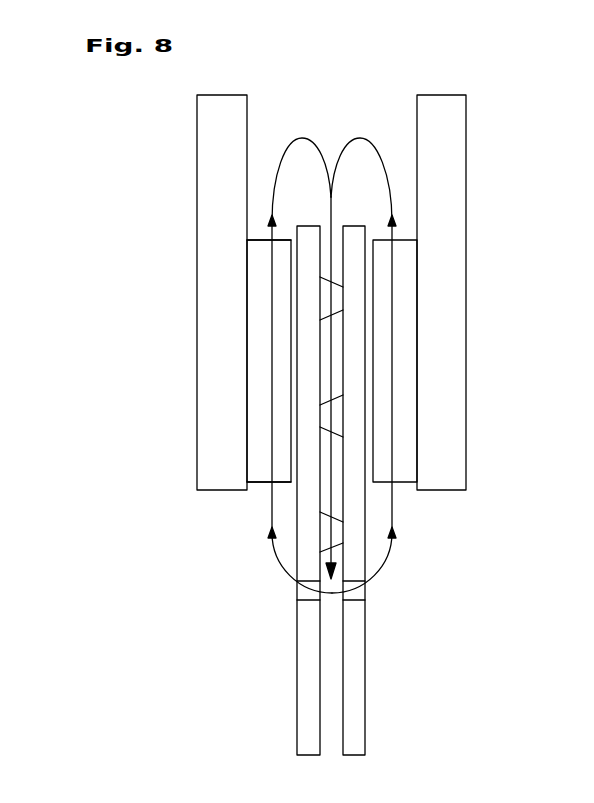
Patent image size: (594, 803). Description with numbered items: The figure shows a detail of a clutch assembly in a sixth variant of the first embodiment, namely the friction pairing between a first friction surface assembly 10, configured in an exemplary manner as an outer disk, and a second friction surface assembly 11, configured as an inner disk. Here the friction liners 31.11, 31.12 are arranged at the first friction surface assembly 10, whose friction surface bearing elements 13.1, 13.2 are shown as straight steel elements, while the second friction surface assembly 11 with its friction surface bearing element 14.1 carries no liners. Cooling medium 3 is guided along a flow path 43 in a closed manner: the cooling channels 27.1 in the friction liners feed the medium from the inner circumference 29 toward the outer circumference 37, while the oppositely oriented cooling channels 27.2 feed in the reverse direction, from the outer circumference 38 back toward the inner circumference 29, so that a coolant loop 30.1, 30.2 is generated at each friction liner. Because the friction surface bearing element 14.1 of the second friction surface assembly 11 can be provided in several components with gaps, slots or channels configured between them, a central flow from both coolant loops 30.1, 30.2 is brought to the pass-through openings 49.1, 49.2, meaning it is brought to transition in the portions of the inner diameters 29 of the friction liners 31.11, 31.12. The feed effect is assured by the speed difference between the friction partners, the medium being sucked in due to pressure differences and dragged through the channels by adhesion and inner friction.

The first friction surface assembly 10 is at (482, 107).
The friction surface bearing element 13.1 is at (216, 153).
The friction surface bearing element 13.2 is at (447, 153).
The friction liner 31.11 is at (258, 271).
The friction liner 31.12 is at (410, 270).
The outer circumference 37 is at (255, 238).
The inner circumference 29 is at (262, 483).
The cooling channel 27.1 is at (262, 368).
The cooling channel 27.2 is at (338, 531).
The coolant 3 is at (327, 95).
The coolant flow path 43 is at (332, 180).
The outer circumference 38 is at (312, 224).
The coolant loop 30.1 is at (285, 575).
The coolant loop 30.2 is at (382, 572).
The pass-through opening 49.1 is at (298, 594).
The pass-through opening 49.2 is at (365, 597).
The friction surface bearing element 14.1 is at (353, 690).
The second friction surface assembly 11 is at (378, 725).